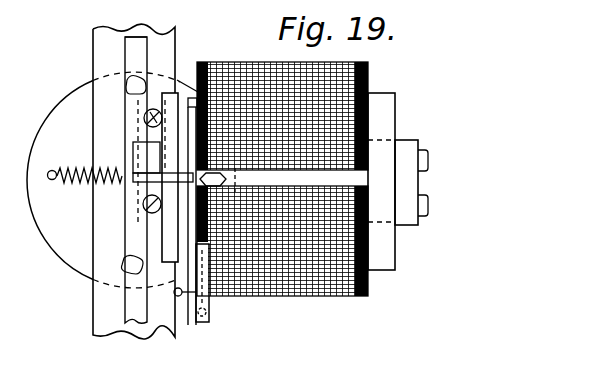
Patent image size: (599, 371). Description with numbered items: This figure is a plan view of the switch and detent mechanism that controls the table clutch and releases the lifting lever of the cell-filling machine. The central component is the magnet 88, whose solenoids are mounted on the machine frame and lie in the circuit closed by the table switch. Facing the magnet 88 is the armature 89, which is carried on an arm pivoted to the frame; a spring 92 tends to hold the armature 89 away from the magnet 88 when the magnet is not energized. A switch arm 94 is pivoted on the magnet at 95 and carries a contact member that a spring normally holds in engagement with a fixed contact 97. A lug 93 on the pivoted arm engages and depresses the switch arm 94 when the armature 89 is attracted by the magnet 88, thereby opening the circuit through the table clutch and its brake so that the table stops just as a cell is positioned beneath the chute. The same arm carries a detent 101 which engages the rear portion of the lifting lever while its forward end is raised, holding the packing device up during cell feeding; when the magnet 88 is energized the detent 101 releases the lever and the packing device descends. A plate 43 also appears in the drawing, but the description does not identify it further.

The plate 43 is at (134, 181).
The magnet 88 is at (327, 298).
The armature 89 is at (173, 113).
The spring 92 is at (80, 182).
The lug 93 is at (147, 172).
The switch arm 94 is at (191, 202).
The pivot 95 is at (192, 98).
The fixed contact 97 is at (202, 320).
The detent 101 is at (140, 152).